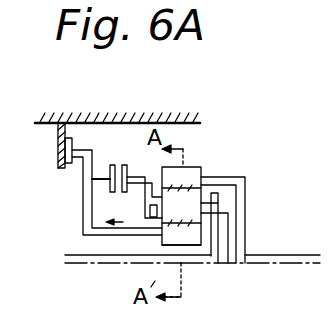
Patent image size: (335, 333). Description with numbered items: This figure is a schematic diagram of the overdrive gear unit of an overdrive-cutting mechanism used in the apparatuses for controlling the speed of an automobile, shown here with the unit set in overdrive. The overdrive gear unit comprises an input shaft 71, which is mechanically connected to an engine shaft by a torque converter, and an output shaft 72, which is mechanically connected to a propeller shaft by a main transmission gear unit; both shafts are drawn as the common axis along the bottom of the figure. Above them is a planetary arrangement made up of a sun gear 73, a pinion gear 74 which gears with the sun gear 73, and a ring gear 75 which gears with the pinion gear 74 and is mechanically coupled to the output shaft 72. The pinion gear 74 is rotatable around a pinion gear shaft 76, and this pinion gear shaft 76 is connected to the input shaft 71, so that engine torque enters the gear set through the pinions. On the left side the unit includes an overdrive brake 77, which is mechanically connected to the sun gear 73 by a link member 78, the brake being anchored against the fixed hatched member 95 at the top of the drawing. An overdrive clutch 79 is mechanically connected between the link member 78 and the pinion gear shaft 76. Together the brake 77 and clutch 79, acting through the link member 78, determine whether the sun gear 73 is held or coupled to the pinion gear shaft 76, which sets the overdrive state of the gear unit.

The input shaft 71 is at (91, 262).
The output shaft 72 is at (276, 263).
The sun gear 73 is at (193, 243).
The pinion gear 74 is at (212, 196).
The ring gear 75 is at (194, 172).
The pinion gear shaft 76 is at (218, 208).
The overdrive brake 77 is at (65, 169).
The link member 78 is at (83, 232).
The overdrive clutch 79 is at (119, 164).
The fixed member 95 is at (99, 121).